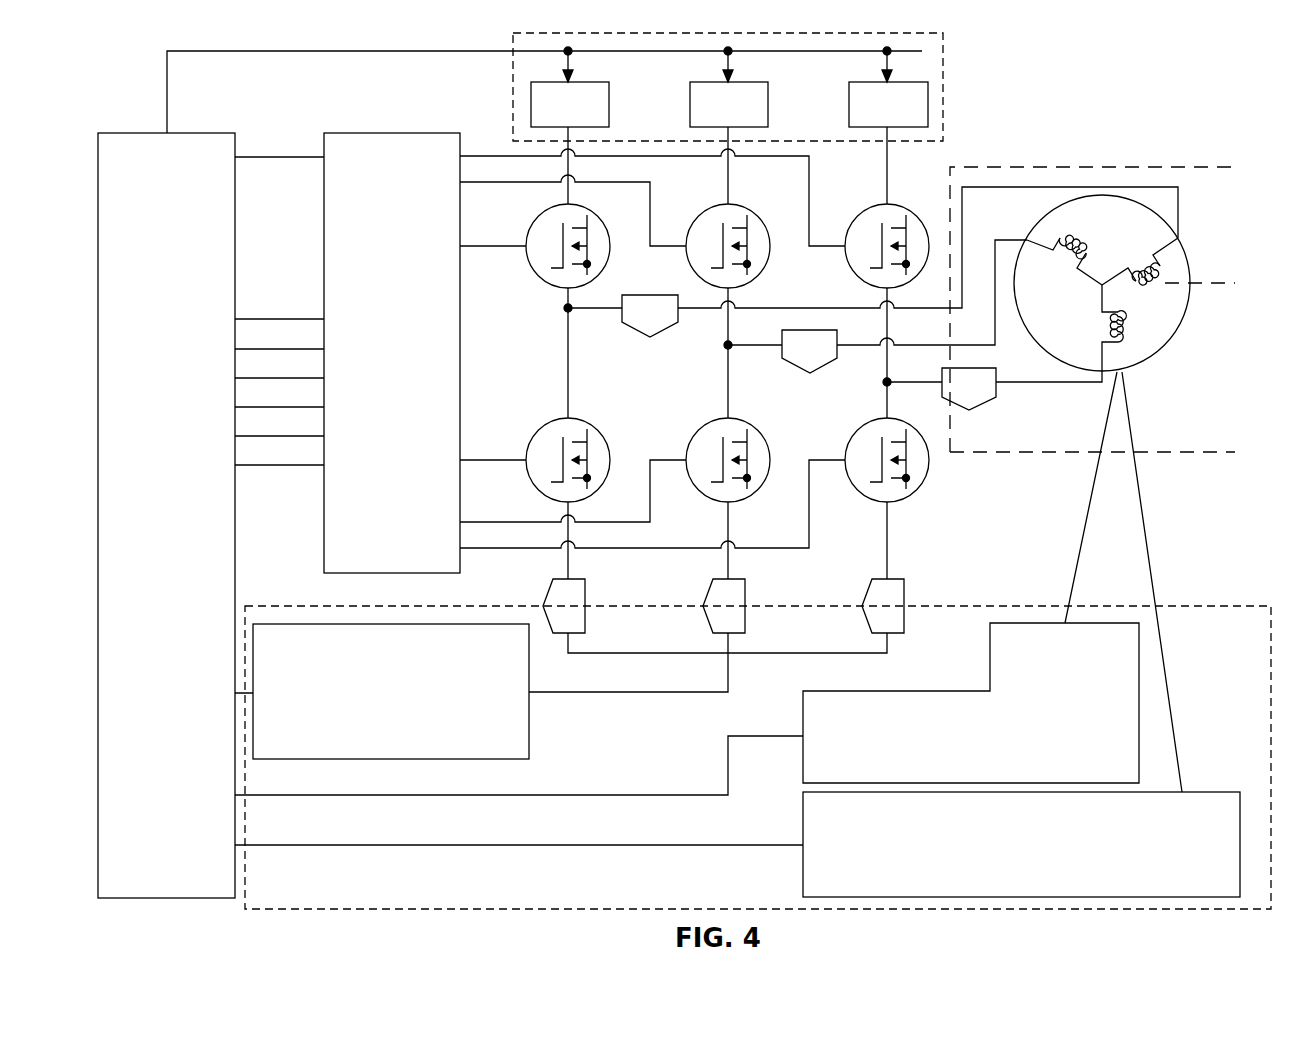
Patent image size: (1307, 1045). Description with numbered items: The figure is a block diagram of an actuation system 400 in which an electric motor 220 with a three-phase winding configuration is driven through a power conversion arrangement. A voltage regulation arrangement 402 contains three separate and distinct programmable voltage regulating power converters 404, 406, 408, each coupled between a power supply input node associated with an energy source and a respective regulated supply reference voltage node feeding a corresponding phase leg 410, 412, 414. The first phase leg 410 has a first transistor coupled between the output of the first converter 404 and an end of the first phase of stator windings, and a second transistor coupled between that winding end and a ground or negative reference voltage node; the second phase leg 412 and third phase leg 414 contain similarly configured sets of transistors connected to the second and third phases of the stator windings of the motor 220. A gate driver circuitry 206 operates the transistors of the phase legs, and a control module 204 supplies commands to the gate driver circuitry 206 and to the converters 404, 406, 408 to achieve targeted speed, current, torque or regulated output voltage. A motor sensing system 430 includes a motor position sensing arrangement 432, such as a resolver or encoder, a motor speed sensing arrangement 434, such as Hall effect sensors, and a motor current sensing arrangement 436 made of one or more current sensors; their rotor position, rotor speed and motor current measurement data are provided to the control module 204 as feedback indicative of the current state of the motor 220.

The actuation system 400 is at (1206, 60).
The control module 204 is at (150, 133).
The gate driver circuitry 206 is at (342, 133).
The electric motor 220 is at (1192, 266).
The voltage regulation arrangement 402 is at (770, 87).
The first programmable voltage regulating power converter 404 is at (550, 118).
The second programmable voltage regulating power converter 406 is at (709, 118).
The third programmable voltage regulating power converter 408 is at (868, 118).
The first phase leg 410 is at (550, 314).
The second phase leg 412 is at (710, 351).
The third phase leg 414 is at (870, 388).
The motor sensing system 430 is at (758, 640).
The motor position sensing arrangement 432 is at (990, 652).
The motor speed sensing arrangement 434 is at (1197, 792).
The motor current sensing arrangement 436 is at (529, 737).